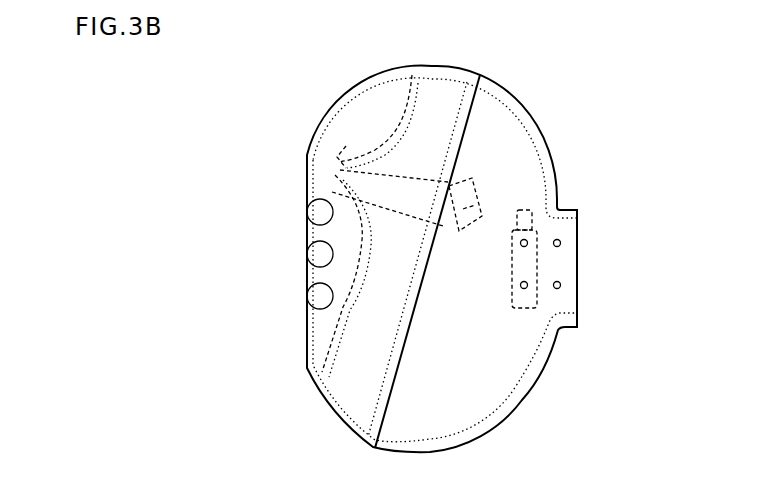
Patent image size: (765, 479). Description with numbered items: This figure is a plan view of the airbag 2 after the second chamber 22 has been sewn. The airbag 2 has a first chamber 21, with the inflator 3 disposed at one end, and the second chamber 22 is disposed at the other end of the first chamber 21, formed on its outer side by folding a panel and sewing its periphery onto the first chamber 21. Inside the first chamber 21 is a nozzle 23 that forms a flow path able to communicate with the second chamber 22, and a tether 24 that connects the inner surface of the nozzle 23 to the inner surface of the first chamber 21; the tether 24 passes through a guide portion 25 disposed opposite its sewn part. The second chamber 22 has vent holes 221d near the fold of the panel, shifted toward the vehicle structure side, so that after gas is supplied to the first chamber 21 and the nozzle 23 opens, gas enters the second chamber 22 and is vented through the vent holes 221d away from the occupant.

The airbag 2 is at (512, 63).
The first chamber 21 is at (516, 136).
The second chamber 22 is at (375, 108).
The nozzle 23 is at (370, 226).
The tether 24 is at (390, 187).
The guide portion 25 is at (472, 191).
The inflator 3 is at (510, 271).
The vent holes 221d is at (309, 211).